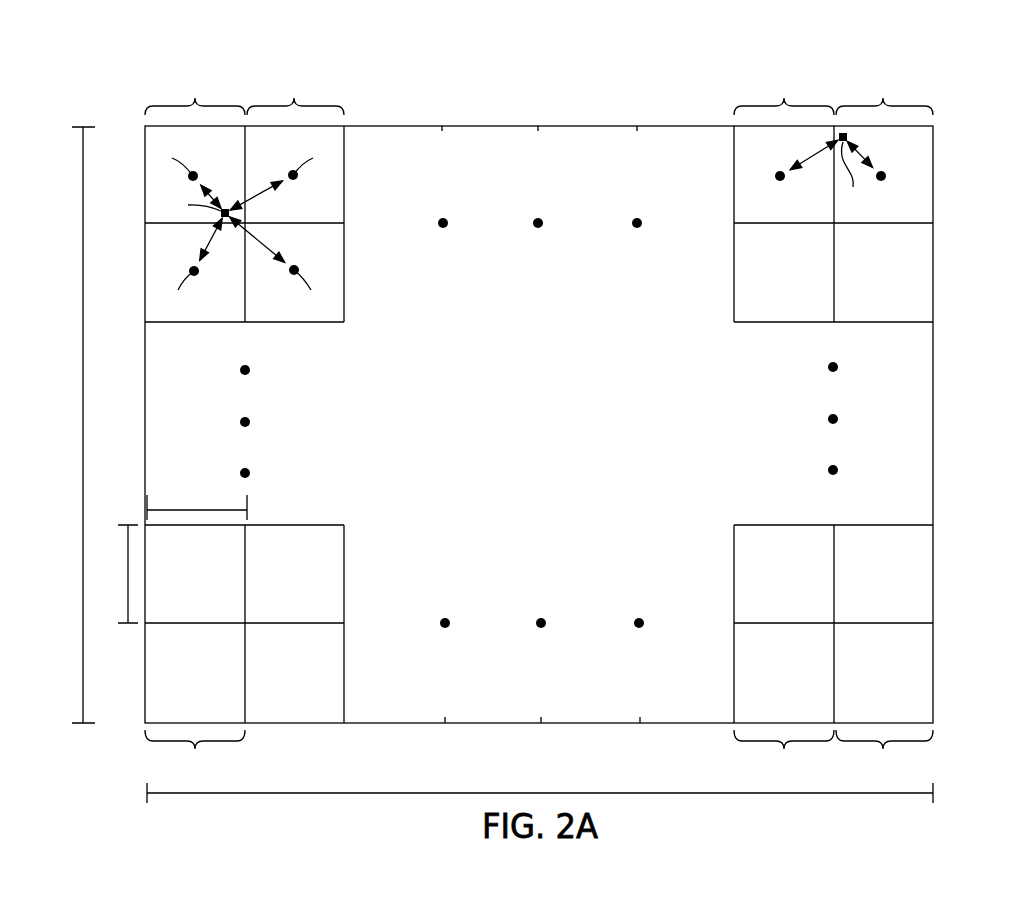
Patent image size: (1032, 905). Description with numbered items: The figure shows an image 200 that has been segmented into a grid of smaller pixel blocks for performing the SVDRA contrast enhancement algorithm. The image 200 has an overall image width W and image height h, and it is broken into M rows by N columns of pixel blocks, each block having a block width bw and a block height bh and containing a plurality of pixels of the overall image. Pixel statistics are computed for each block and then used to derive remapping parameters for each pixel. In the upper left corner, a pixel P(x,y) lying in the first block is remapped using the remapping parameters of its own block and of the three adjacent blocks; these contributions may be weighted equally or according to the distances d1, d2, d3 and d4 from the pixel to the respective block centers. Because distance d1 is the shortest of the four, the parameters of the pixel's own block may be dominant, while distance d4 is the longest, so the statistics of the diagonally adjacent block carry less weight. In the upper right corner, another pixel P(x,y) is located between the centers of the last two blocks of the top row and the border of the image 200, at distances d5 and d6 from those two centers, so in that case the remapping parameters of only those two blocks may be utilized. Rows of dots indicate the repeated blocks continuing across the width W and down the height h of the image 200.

The image 200 is at (981, 96).
The distance d1 is at (213, 192).
The distance d2 is at (256, 189).
The distance d3 is at (212, 239).
The distance d4 is at (257, 240).
The distance d5 is at (814, 153).
The distance d6 is at (865, 152).
The image height h is at (76, 425).
The image width W is at (540, 787).
The block width bw is at (197, 504).
The block height bh is at (121, 574).